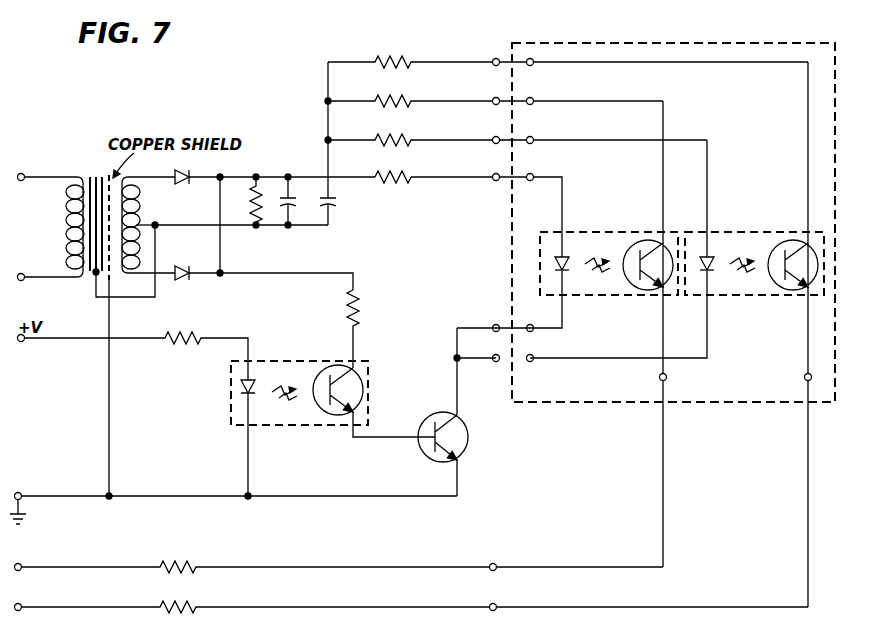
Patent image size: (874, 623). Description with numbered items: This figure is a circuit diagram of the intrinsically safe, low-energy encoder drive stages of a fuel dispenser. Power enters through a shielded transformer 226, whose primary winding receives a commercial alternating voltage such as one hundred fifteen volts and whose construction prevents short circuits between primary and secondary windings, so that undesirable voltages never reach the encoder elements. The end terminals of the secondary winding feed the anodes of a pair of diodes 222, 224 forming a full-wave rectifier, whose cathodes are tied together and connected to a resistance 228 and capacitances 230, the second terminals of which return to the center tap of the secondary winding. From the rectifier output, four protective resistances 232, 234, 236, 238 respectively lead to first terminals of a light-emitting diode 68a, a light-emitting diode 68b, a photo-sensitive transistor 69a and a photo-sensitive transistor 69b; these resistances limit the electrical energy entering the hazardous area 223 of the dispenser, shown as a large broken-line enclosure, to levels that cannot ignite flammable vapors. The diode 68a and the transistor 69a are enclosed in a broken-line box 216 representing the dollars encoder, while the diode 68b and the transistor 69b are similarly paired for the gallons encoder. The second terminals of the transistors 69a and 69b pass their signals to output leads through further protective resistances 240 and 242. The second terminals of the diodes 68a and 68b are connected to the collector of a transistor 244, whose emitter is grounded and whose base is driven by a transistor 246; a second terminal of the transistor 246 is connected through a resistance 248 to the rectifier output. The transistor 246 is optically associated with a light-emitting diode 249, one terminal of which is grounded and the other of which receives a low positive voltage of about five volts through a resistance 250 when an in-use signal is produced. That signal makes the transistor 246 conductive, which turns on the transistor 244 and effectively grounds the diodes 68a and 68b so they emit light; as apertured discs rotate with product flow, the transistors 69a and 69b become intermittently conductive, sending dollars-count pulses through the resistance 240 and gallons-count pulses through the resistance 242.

The box 216 is at (627, 223).
The diode 222 is at (181, 182).
The hazardous area 223 is at (727, 24).
The diode 224 is at (190, 282).
The shielded transformer 226 is at (88, 280).
The resistance 228 is at (252, 208).
The capacitances 230 is at (326, 207).
The resistance 232 is at (393, 170).
The resistance 234 is at (393, 132).
The resistance 236 is at (390, 94).
The resistance 238 is at (396, 56).
The resistance 240 is at (178, 563).
The resistance 242 is at (180, 601).
The transistor 244 is at (466, 455).
The transistor 246 is at (363, 378).
The resistance 248 is at (360, 318).
The light-emitting diode 249 is at (236, 384).
The resistance 250 is at (190, 337).
The light-emitting diode 68a is at (543, 259).
The transistor 69a is at (632, 280).
The diode 68b is at (716, 268).
The transistor 69b is at (772, 288).